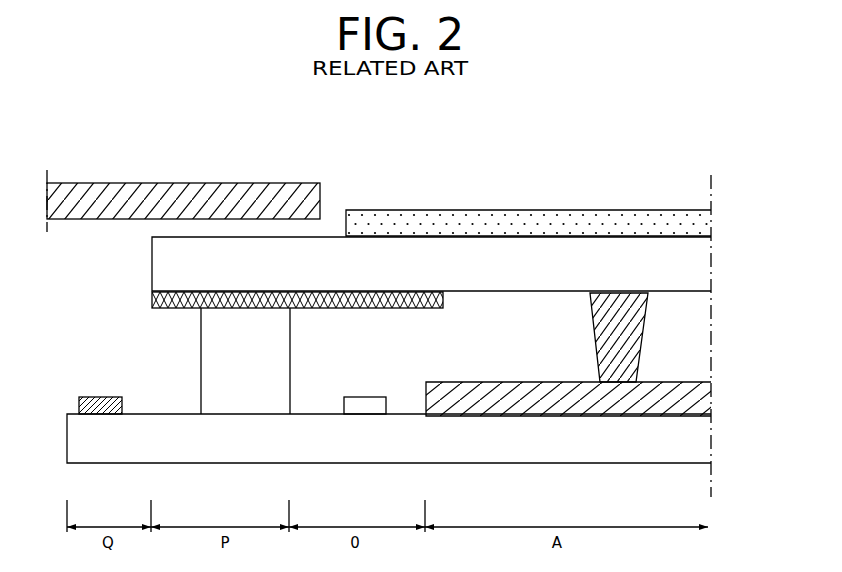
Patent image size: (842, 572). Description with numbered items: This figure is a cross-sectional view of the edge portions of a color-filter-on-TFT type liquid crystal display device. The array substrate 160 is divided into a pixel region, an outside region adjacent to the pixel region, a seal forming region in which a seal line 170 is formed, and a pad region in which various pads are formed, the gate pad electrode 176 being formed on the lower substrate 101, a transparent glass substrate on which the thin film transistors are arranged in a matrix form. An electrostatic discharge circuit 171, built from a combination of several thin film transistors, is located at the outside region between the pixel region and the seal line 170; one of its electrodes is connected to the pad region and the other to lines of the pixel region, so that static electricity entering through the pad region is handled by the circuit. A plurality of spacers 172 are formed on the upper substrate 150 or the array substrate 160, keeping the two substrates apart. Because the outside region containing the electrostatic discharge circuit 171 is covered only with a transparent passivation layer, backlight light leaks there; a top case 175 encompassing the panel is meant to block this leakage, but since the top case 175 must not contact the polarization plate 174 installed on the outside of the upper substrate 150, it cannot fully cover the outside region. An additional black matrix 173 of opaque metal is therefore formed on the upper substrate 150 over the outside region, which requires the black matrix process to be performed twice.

The lower substrate 101 is at (699, 437).
The upper substrate 150 is at (701, 266).
The array substrate 160 is at (698, 397).
The seal line 170 is at (236, 406).
The electrostatic discharge (ESD) circuit 171 is at (361, 406).
The spacer 172 is at (646, 336).
The black matrix 173 is at (152, 299).
The polarization plate 174 is at (431, 222).
The top case 175 is at (231, 195).
The gate pad electrode 176 is at (105, 414).